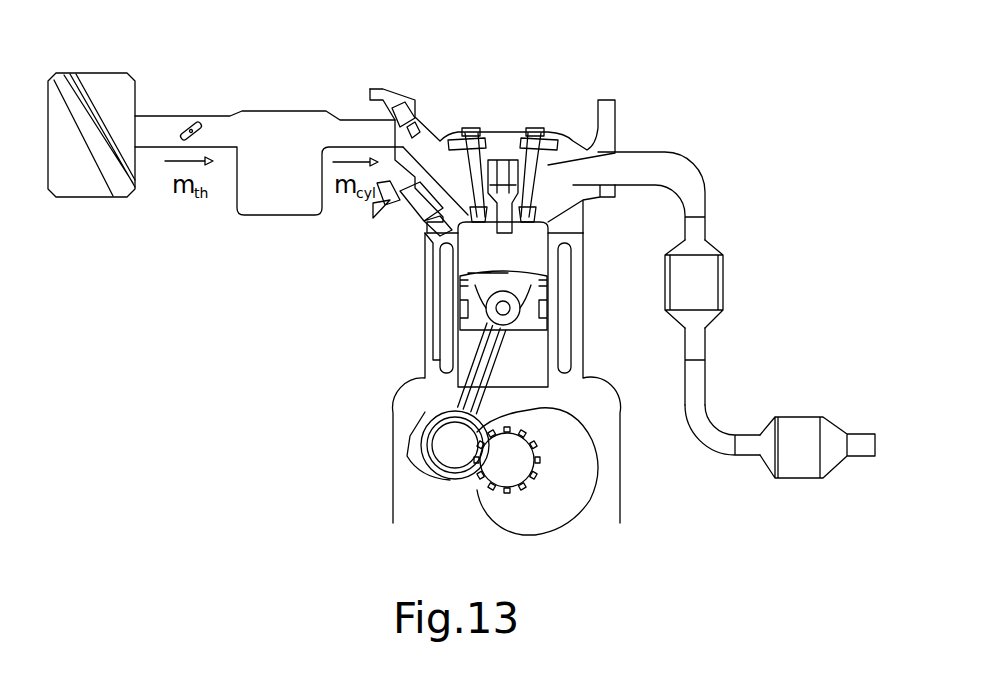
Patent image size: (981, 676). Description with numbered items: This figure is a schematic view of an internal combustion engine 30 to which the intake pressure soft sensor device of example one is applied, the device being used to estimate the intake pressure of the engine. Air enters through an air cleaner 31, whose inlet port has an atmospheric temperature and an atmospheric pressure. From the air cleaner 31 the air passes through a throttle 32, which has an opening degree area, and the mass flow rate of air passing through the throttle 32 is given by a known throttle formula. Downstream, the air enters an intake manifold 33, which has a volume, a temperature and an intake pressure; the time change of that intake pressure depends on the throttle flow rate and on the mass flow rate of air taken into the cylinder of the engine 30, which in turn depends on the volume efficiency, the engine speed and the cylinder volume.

The internal combustion engine 30 is at (512, 107).
The air cleaner 31 is at (86, 198).
The throttle 32 is at (184, 123).
The intake manifold 33 is at (290, 110).